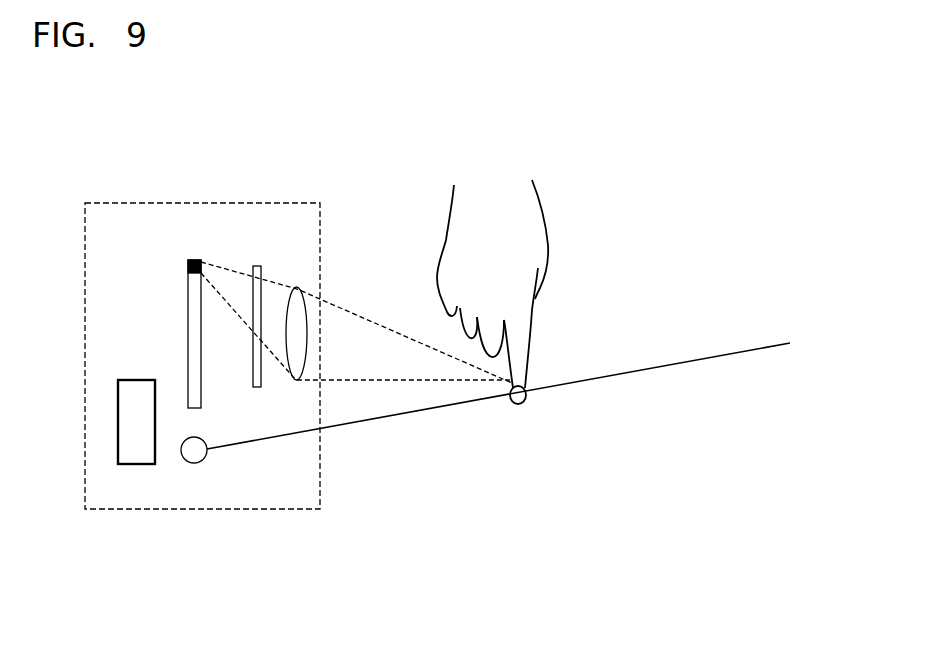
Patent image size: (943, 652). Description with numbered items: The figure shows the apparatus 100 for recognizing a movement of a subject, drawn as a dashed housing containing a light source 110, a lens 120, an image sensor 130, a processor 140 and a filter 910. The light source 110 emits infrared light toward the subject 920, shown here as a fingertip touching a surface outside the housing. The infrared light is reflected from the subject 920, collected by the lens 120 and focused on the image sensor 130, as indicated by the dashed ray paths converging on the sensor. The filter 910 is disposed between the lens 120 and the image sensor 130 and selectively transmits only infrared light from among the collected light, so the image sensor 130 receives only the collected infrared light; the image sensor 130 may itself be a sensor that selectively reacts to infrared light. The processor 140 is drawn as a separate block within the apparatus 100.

The apparatus 100 is at (205, 203).
The light source 110 is at (194, 463).
The lens 120 is at (297, 287).
The image sensor 130 is at (188, 300).
The processor 140 is at (136, 379).
The filter 910 is at (256, 266).
The subject 920 is at (527, 397).